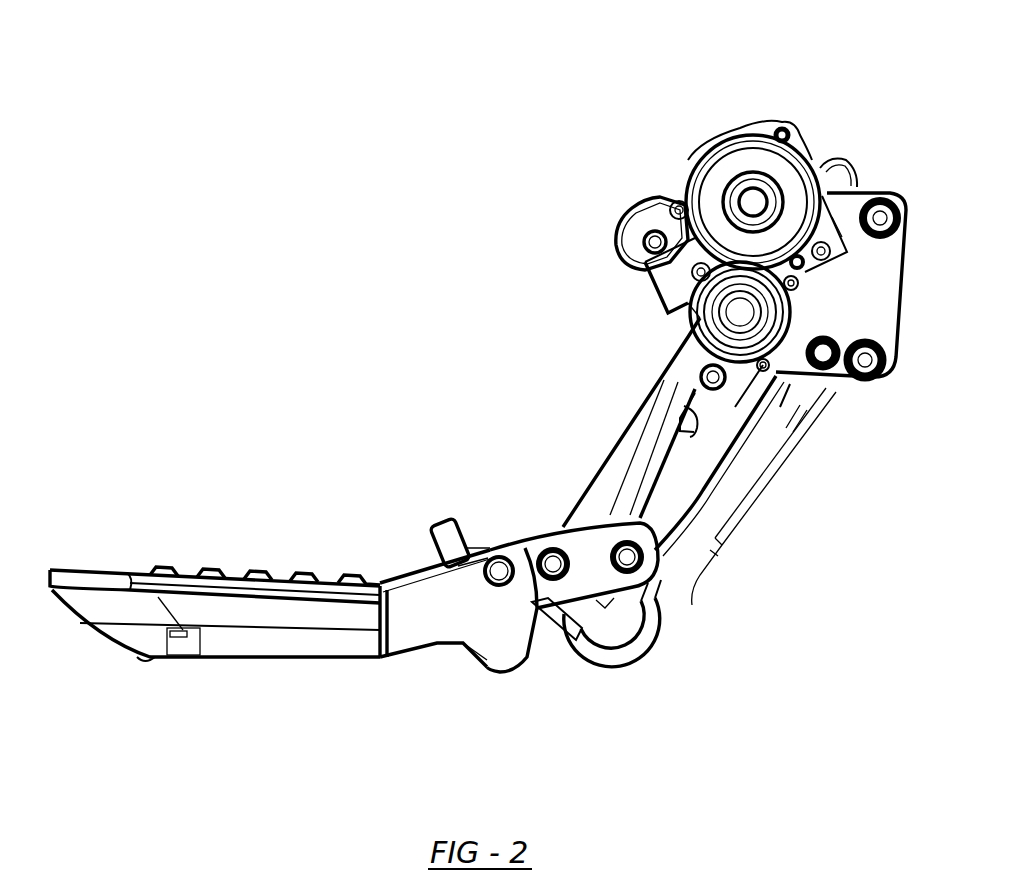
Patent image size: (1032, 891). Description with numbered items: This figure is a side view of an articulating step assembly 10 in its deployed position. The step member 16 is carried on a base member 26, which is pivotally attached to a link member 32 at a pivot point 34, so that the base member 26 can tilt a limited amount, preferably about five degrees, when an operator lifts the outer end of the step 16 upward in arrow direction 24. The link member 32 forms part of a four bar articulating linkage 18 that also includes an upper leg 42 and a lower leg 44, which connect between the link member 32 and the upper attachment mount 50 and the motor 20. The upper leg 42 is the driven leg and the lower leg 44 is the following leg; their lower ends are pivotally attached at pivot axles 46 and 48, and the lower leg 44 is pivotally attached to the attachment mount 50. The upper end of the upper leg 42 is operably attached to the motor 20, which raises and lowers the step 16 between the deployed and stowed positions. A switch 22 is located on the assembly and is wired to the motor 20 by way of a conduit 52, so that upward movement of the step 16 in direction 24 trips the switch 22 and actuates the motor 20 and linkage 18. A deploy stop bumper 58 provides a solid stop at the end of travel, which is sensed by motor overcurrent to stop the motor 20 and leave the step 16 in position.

The articulating step assembly 10 is at (480, 92).
The step member 16 is at (232, 640).
The articulating linkage 18 is at (610, 399).
The motor 20 is at (733, 160).
The switch 22 is at (534, 686).
The arrow direction 24 is at (40, 557).
The base member 26 is at (432, 628).
The link member 32 is at (553, 565).
The pivot point 34 is at (499, 570).
The upper leg 42 is at (662, 384).
The lower leg 44 is at (713, 497).
The pivot axle 46 is at (560, 613).
The pivot axle 48 is at (628, 560).
The upper attachment mount 50 is at (873, 268).
The conduit 52 is at (653, 652).
The deploy stop bumper 58 is at (679, 430).